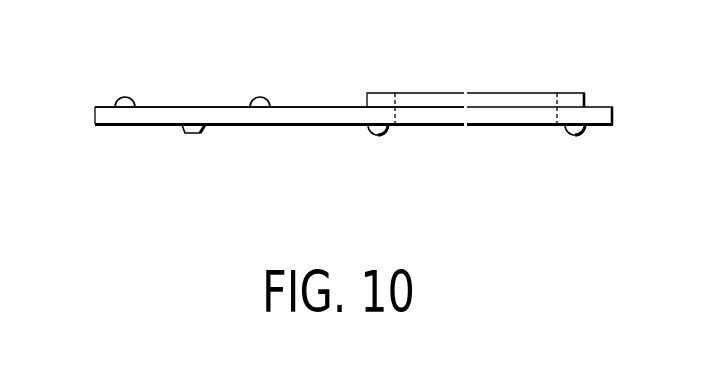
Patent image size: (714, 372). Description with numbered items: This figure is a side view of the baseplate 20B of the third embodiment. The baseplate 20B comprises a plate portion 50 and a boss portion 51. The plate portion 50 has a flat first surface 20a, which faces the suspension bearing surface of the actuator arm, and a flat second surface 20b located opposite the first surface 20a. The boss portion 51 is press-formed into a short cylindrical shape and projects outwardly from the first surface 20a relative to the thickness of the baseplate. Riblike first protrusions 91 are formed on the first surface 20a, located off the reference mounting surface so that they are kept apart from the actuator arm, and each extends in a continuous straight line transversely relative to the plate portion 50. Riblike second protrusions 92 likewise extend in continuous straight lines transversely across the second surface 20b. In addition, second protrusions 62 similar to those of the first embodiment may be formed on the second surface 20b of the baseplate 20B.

The baseplate 20B is at (102, 95).
The plate portion 50 is at (142, 115).
The first surface 20a is at (323, 107).
The second surface 20b is at (310, 125).
The first protrusion 91 is at (125, 97).
The second protrusion 92 is at (378, 135).
The second protrusion 62 is at (195, 133).
The boss portion 51 is at (570, 93).